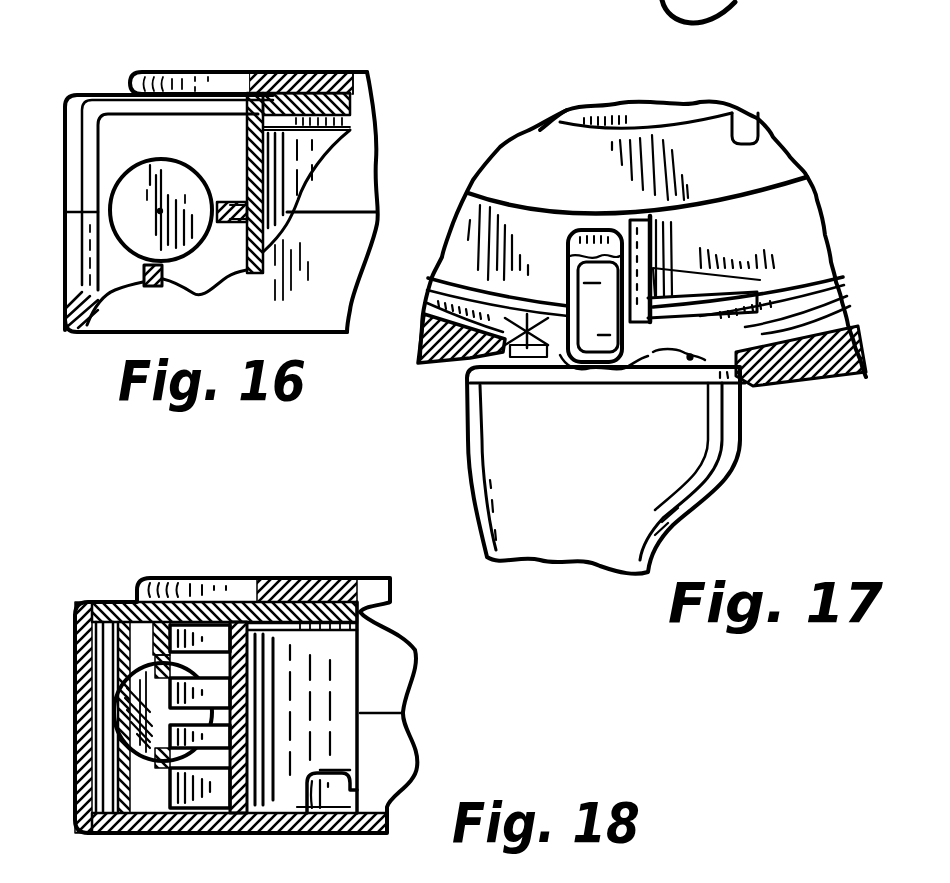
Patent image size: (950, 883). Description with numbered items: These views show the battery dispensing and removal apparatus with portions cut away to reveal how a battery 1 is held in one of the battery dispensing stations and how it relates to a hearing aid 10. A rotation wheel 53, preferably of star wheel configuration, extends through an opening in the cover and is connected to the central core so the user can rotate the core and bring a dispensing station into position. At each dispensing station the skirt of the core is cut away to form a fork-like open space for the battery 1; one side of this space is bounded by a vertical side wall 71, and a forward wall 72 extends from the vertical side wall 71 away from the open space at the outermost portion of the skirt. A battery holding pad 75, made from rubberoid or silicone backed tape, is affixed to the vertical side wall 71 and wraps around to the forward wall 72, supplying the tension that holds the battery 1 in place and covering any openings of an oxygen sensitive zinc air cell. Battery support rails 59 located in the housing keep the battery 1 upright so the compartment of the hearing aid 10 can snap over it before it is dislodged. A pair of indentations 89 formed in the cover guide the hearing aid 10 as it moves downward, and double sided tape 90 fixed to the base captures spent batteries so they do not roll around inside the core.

In FIG. 16, the battery 1 is at (177, 170).
In FIG. 17, the battery 1 is at (580, 285).
In FIG. 18, the battery 1 is at (123, 724).
In FIG. 17, the hearing aid 10 is at (593, 462).
In FIG. 16, the rotation wheel 53 is at (318, 72).
In FIG. 16, the battery support rails 59 is at (165, 279).
In FIG. 18, the battery support rails 59 is at (162, 795).
In FIG. 17, the vertical side wall 71 is at (655, 232).
In FIG. 17, the forward wall 72 is at (710, 298).
In FIG. 18, the forward wall 72 is at (160, 648).
In FIG. 17, the battery holding pad 75 is at (656, 366).
In FIG. 18, the battery holding pad 75 is at (160, 691).
In FIG. 17, the indentations 89 is at (447, 370).
In FIG. 18, the double sided tape 90 is at (397, 790).